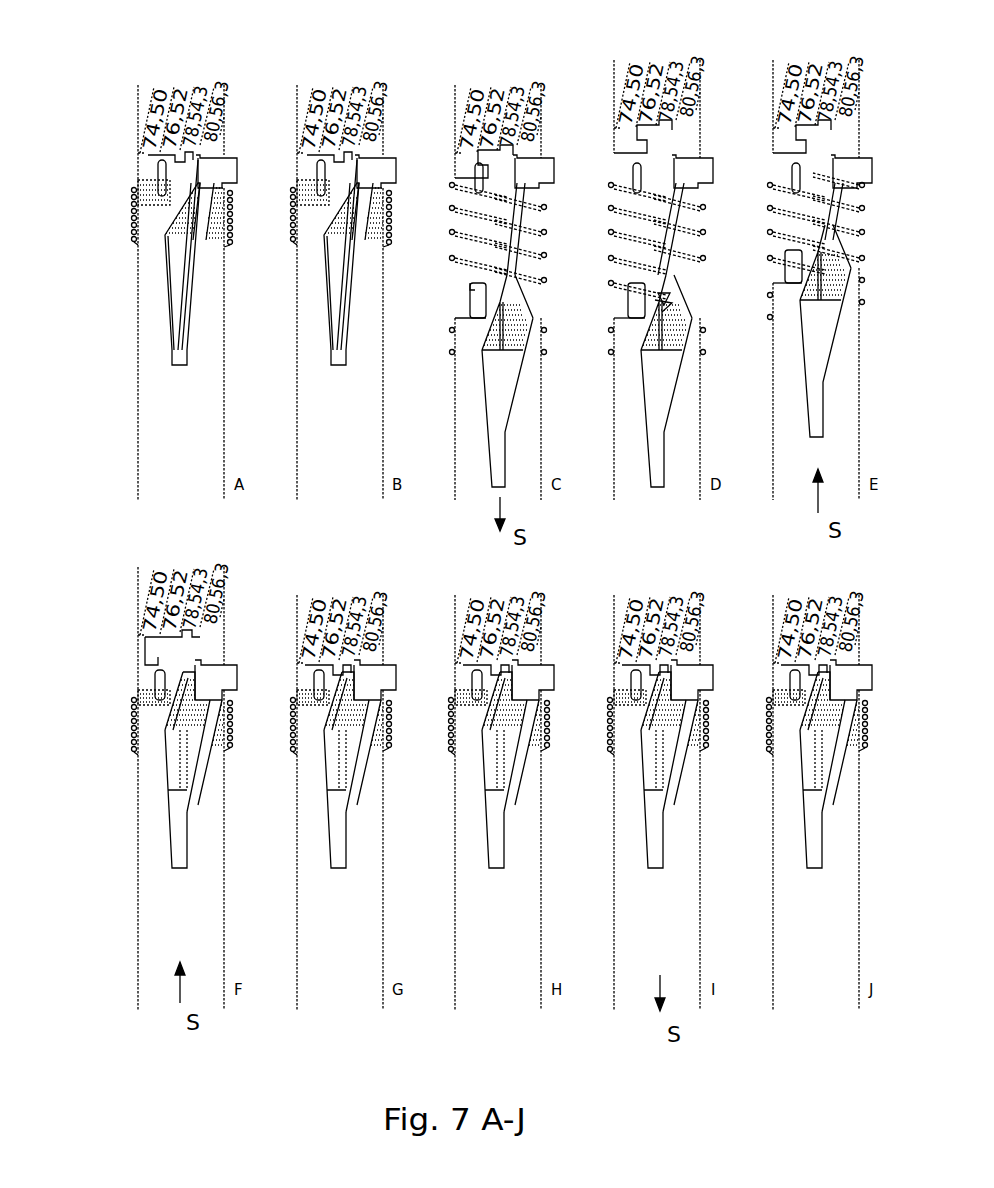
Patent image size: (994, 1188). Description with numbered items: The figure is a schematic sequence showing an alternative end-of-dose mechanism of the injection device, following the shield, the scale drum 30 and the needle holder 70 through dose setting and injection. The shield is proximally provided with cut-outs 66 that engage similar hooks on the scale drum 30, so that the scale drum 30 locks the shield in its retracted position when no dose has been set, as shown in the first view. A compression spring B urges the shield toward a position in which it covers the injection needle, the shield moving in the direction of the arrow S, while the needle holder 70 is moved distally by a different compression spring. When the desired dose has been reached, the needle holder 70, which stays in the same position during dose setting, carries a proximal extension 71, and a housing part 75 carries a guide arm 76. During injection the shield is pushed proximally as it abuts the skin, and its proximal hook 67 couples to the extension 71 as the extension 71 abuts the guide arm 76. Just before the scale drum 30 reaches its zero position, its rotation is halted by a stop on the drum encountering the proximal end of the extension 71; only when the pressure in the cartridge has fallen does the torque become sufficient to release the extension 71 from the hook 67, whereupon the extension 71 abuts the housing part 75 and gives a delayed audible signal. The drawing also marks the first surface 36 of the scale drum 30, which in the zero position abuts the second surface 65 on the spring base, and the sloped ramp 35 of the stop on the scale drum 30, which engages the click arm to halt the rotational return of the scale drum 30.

The scale drum 30 is at (197, 98).
The sloped ramp 35 is at (152, 180).
The first surface 36 is at (185, 642).
The second surface 65 is at (147, 428).
The cut-outs 66 is at (153, 175).
The hook 67 is at (675, 303).
The needle holder 70 is at (180, 357).
The extension 71 is at (652, 240).
The housing part 75 is at (707, 165).
The guide arm 76 is at (668, 258).
The compression spring B is at (135, 193).